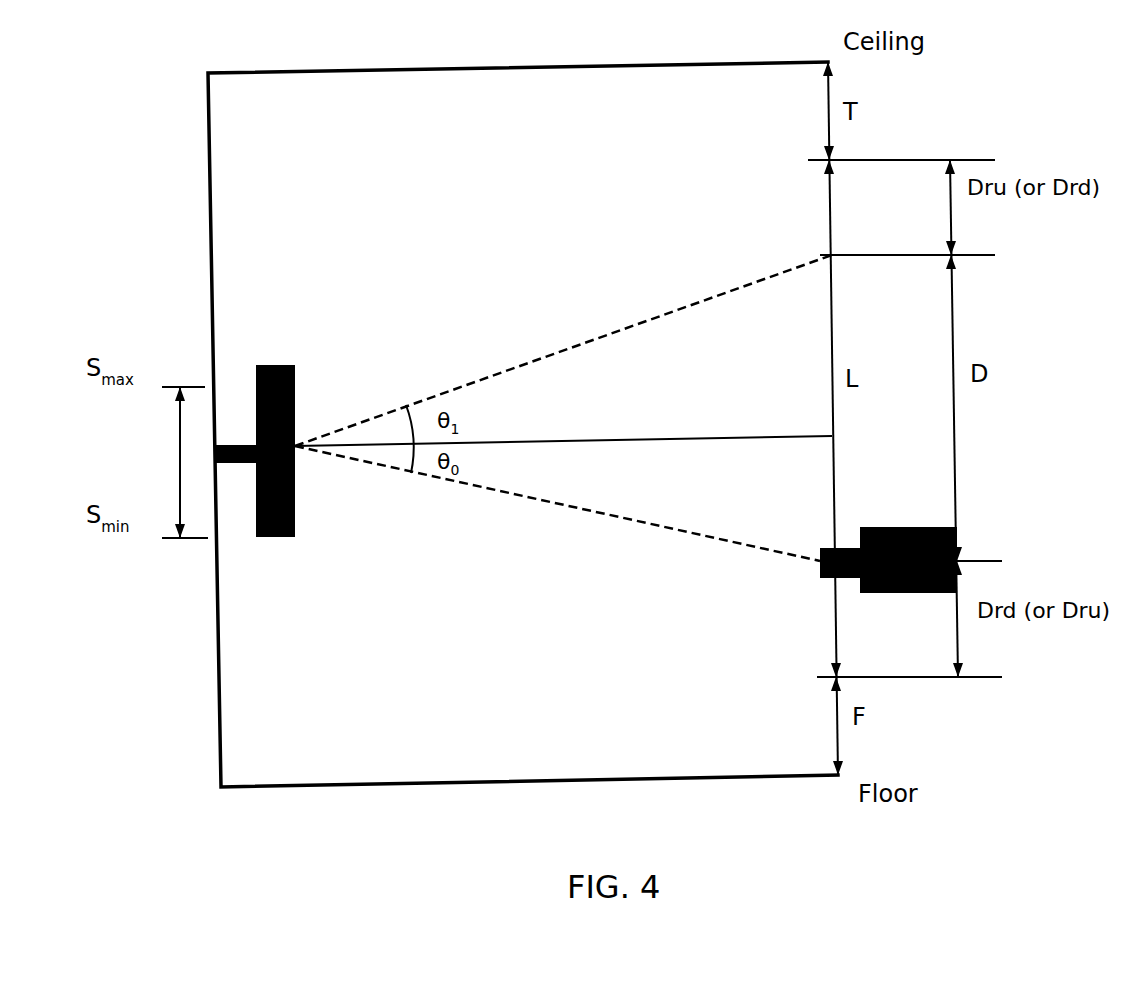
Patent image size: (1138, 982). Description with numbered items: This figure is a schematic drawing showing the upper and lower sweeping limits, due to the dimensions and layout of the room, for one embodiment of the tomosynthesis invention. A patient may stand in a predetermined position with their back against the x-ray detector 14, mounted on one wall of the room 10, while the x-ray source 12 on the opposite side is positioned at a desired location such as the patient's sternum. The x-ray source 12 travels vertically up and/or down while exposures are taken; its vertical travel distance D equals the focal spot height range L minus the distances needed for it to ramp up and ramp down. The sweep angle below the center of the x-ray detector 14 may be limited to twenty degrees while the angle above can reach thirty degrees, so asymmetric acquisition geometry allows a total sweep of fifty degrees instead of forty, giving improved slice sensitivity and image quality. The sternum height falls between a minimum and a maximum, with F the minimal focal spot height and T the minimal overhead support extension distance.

The room 10 is at (523, 418).
The x-ray source 12 is at (955, 535).
The x-ray detector 14 is at (295, 380).